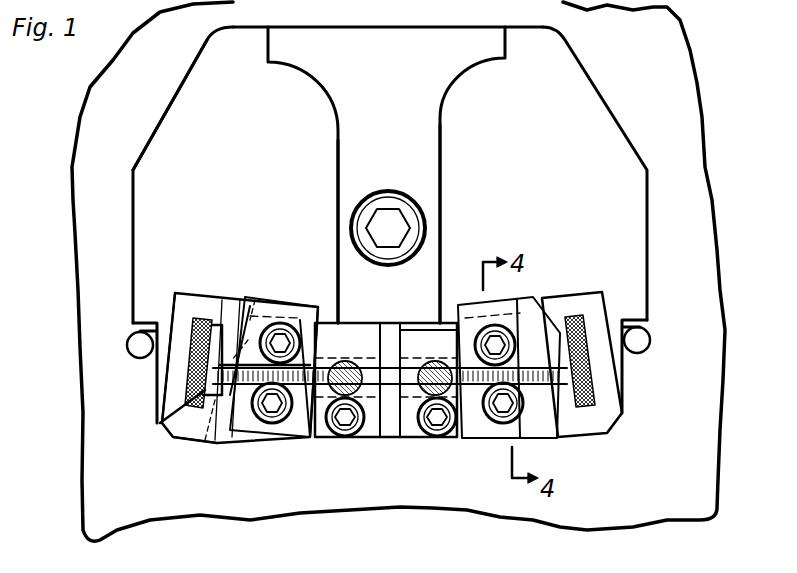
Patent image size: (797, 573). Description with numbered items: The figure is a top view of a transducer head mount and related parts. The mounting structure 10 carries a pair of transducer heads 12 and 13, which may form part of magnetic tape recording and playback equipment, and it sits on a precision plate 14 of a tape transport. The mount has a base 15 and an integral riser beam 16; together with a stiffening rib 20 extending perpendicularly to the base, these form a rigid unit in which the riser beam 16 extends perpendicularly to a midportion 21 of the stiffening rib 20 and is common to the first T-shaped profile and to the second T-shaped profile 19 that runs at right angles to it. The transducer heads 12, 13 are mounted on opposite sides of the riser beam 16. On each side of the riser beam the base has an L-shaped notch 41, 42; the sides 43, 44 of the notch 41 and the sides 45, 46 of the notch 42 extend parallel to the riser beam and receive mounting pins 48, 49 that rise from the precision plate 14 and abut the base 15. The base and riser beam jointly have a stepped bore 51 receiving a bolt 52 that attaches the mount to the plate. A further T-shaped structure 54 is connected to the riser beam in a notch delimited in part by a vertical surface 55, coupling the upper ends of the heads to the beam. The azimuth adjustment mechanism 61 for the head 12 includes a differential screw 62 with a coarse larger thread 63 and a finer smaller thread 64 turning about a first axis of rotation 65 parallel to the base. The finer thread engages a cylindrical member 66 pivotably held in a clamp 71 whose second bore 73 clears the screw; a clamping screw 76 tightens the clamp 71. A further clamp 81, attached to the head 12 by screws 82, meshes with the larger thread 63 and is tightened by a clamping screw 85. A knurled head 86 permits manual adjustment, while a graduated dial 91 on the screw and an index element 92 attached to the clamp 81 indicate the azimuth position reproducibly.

The mounting structure 10 is at (655, 198).
The transducer head 12 is at (205, 450).
The transducer head 13 is at (578, 452).
The precision plate 14 is at (727, 392).
The base 15 is at (148, 173).
The riser beam 16 is at (341, 157).
The second T-shaped profile 19 is at (450, 121).
The stiffening rib 20 is at (435, 40).
The midportion of stiffening rib 21 is at (397, 102).
The L-shaped notch 41 is at (145, 371).
The L-shaped notch 42 is at (638, 388).
The notch side 43 is at (150, 413).
The notch side 44 is at (142, 322).
The notch side 45 is at (623, 408).
The notch side 46 is at (650, 330).
The mounting pin 48 is at (127, 345).
The mounting pin 49 is at (650, 348).
The stepped bore 51 is at (388, 192).
The bolt 52 is at (410, 217).
The further T-shaped structure 54 is at (333, 440).
The vertical surface 55 is at (387, 325).
The azimuth adjustment mechanism 61 is at (290, 292).
The differential screw 62 is at (190, 315).
The thread 63 is at (313, 440).
The thread 64 is at (415, 342).
The first axis of rotation 65 is at (173, 362).
The cylindrical member 66 is at (347, 323).
The clamp 71 is at (408, 325).
The second bore 73 is at (360, 365).
The clamping screw 76 is at (367, 437).
The further clamp 81 is at (260, 440).
The screws 82 is at (302, 312).
The clamping screw 85 is at (276, 425).
The knurled head 86 is at (162, 425).
The dial 91 is at (217, 313).
The index element 92 is at (230, 437).